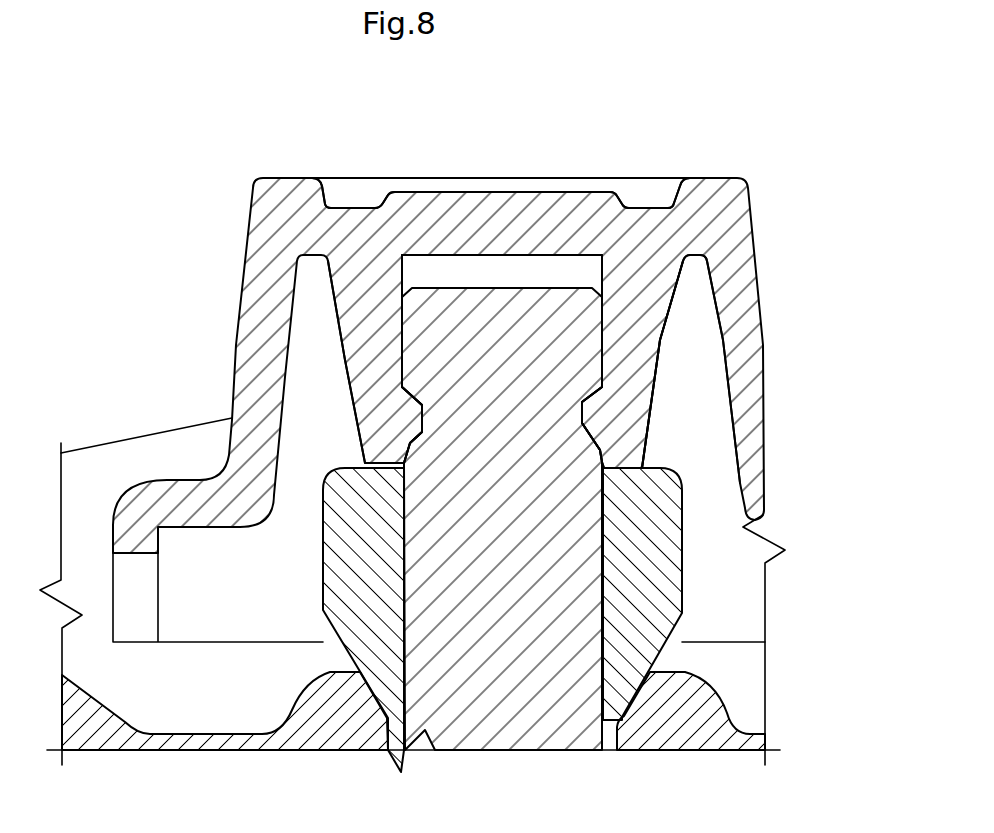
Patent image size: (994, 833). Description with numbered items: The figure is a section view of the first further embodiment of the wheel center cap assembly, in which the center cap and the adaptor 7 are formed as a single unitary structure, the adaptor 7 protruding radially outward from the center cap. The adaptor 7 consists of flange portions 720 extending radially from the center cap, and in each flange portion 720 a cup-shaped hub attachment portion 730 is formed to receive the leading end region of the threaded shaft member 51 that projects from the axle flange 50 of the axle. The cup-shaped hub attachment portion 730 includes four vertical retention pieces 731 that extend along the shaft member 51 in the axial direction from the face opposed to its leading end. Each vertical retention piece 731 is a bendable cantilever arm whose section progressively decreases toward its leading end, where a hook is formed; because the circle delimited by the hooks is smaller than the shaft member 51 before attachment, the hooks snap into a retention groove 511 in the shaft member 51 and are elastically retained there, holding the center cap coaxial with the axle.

The adaptor 7 is at (247, 231).
The flange portion 720 is at (405, 190).
The threaded shaft member 51 is at (515, 310).
The cup-shaped hub attachment portion 730 is at (684, 288).
The vertical retention piece 731 is at (347, 345).
The retention groove 511 is at (593, 422).
The axle flange 50 is at (313, 700).